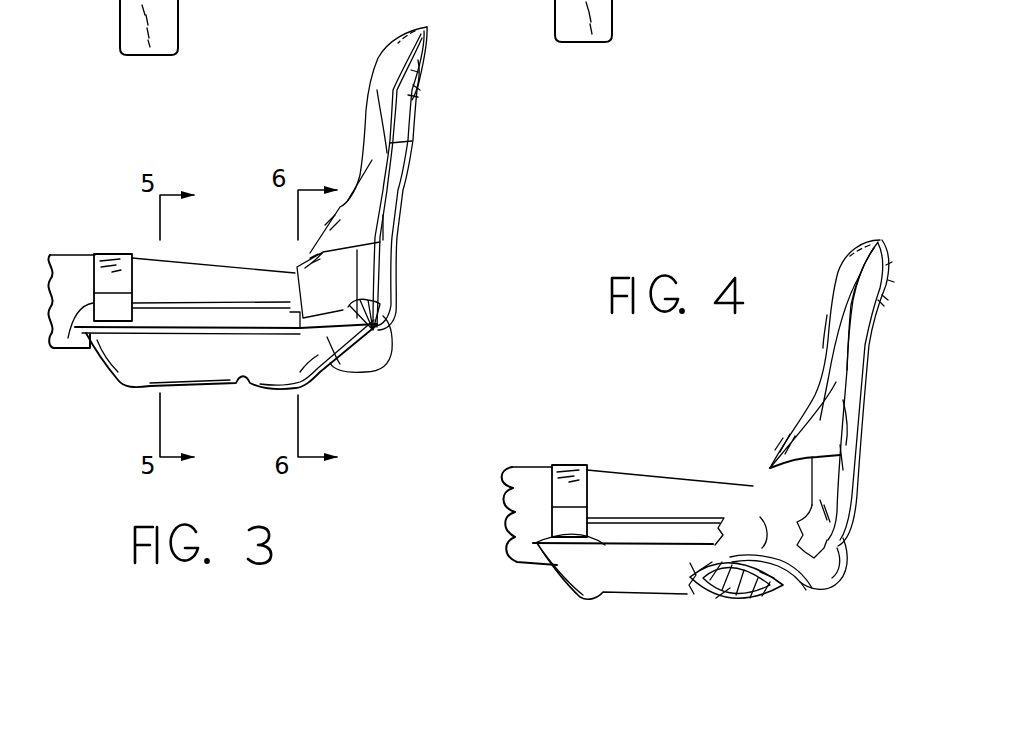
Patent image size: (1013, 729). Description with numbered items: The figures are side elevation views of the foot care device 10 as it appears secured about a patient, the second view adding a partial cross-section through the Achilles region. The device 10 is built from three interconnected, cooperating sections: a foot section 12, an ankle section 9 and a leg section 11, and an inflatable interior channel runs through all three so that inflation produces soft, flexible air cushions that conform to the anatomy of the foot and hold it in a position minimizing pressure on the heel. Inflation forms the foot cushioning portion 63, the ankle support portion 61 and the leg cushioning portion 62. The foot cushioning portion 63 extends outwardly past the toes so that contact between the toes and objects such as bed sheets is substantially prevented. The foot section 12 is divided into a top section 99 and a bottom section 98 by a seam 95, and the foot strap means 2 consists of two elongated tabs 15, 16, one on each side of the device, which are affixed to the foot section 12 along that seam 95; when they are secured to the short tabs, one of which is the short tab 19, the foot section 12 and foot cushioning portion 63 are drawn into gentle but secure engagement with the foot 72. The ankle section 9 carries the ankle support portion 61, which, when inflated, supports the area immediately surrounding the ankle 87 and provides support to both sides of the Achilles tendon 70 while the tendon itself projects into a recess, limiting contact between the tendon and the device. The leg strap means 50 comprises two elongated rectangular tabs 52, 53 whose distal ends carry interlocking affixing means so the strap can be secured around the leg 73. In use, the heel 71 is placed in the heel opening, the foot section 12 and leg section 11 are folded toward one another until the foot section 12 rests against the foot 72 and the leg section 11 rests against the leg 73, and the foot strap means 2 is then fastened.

In FIG. 3, the foot strap means 2 is at (293, 257).
In FIG. 3, the ankle section 9 is at (314, 399).
In FIG. 4, the ankle section 9 is at (718, 613).
In FIG. 3, the foot care device 10 is at (105, 485).
In FIG. 4, the foot care device 10 is at (675, 452).
In FIG. 3, the leg section 11 is at (225, 387).
In FIG. 4, the leg section 11 is at (619, 606).
In FIG. 3, the foot section 12 is at (421, 162).
In FIG. 4, the foot section 12 is at (871, 368).
In FIG. 3, the elongated tab 15 is at (320, 275).
In FIG. 3, the elongated tab 16 is at (365, 218).
In FIG. 4, the elongated tab 16 is at (792, 434).
In FIG. 3, the short tab 19 is at (383, 288).
In FIG. 3, the leg strap means 50 is at (117, 236).
In FIG. 4, the leg strap means 50 is at (570, 452).
In FIG. 3, the elongated rectangular tab 52 is at (97, 239).
In FIG. 3, the elongated rectangular tab 53 is at (68, 338).
In FIG. 3, the ankle support portion 61 is at (337, 388).
In FIG. 4, the ankle support portion 61 is at (753, 596).
In FIG. 3, the leg cushioning portion 62 is at (160, 362).
In FIG. 4, the leg cushioning portion 62 is at (588, 570).
In FIG. 3, the foot cushioning portion 63 is at (383, 103).
In FIG. 4, the foot cushioning portion 63 is at (840, 333).
In FIG. 4, the Achilles tendon 70 is at (807, 592).
In FIG. 3, the heel 71 is at (377, 343).
In FIG. 4, the heel 71 is at (827, 563).
In FIG. 3, the foot 72 is at (355, 177).
In FIG. 4, the foot 72 is at (813, 397).
In FIG. 3, the leg 73 is at (178, 282).
In FIG. 4, the leg 73 is at (630, 487).
In FIG. 4, the ankle 87 is at (753, 530).
In FIG. 3, the seam 95 is at (415, 135).
In FIG. 4, the seam 95 is at (847, 397).
In FIG. 3, the bottom section 98 is at (420, 108).
In FIG. 4, the bottom section 98 is at (890, 260).
In FIG. 3, the top section 99 is at (388, 58).
In FIG. 4, the top section 99 is at (853, 277).